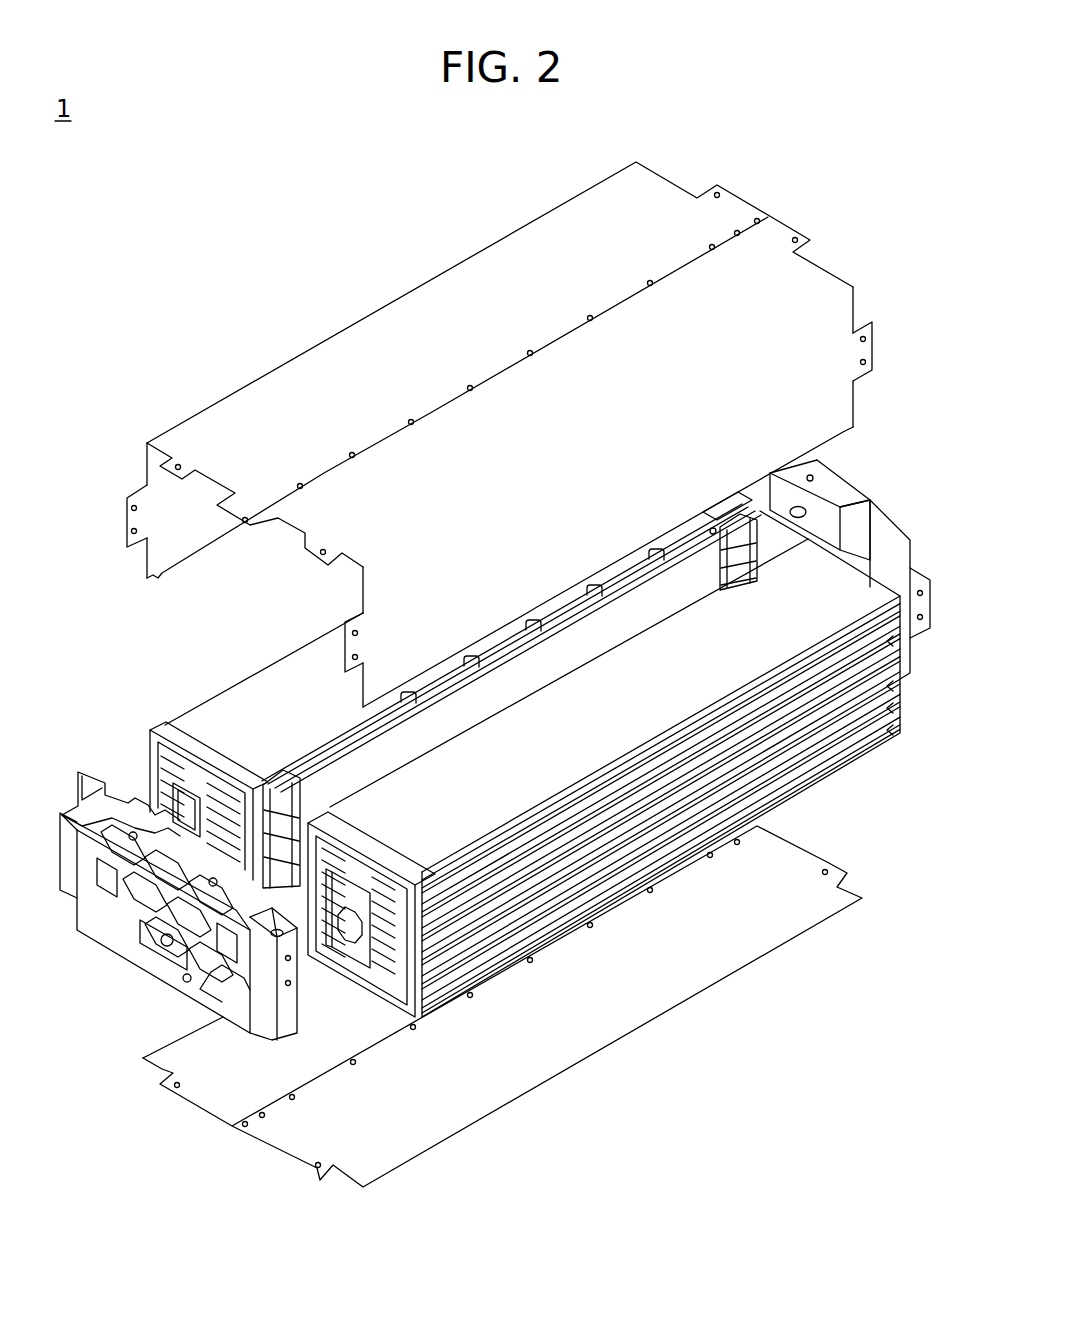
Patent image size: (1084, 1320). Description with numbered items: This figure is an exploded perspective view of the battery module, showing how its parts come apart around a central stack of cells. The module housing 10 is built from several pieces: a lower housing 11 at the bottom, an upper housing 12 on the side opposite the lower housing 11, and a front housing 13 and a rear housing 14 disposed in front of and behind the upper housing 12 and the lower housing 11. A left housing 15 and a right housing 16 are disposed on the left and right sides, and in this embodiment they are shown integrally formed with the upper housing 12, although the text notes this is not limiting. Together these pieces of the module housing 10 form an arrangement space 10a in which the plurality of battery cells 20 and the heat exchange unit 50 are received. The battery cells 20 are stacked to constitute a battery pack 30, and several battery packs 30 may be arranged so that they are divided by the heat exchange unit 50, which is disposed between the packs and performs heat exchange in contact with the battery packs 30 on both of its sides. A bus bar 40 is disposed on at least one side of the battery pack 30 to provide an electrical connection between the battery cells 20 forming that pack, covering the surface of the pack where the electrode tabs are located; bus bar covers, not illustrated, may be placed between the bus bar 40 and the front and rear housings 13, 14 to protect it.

The module housing 10 is at (502, 443).
The arrangement space 10a is at (239, 562).
The lower housing 11 is at (617, 1023).
The upper housing 12 is at (497, 253).
The front housing 13 is at (197, 952).
The rear housing 14 is at (863, 508).
The left housing 15 is at (157, 481).
The right housing 16 is at (842, 375).
The battery cells 20 is at (533, 754).
The battery pack 30 is at (820, 748).
The bus bar 40 is at (377, 978).
The heat exchange unit 50 is at (314, 755).